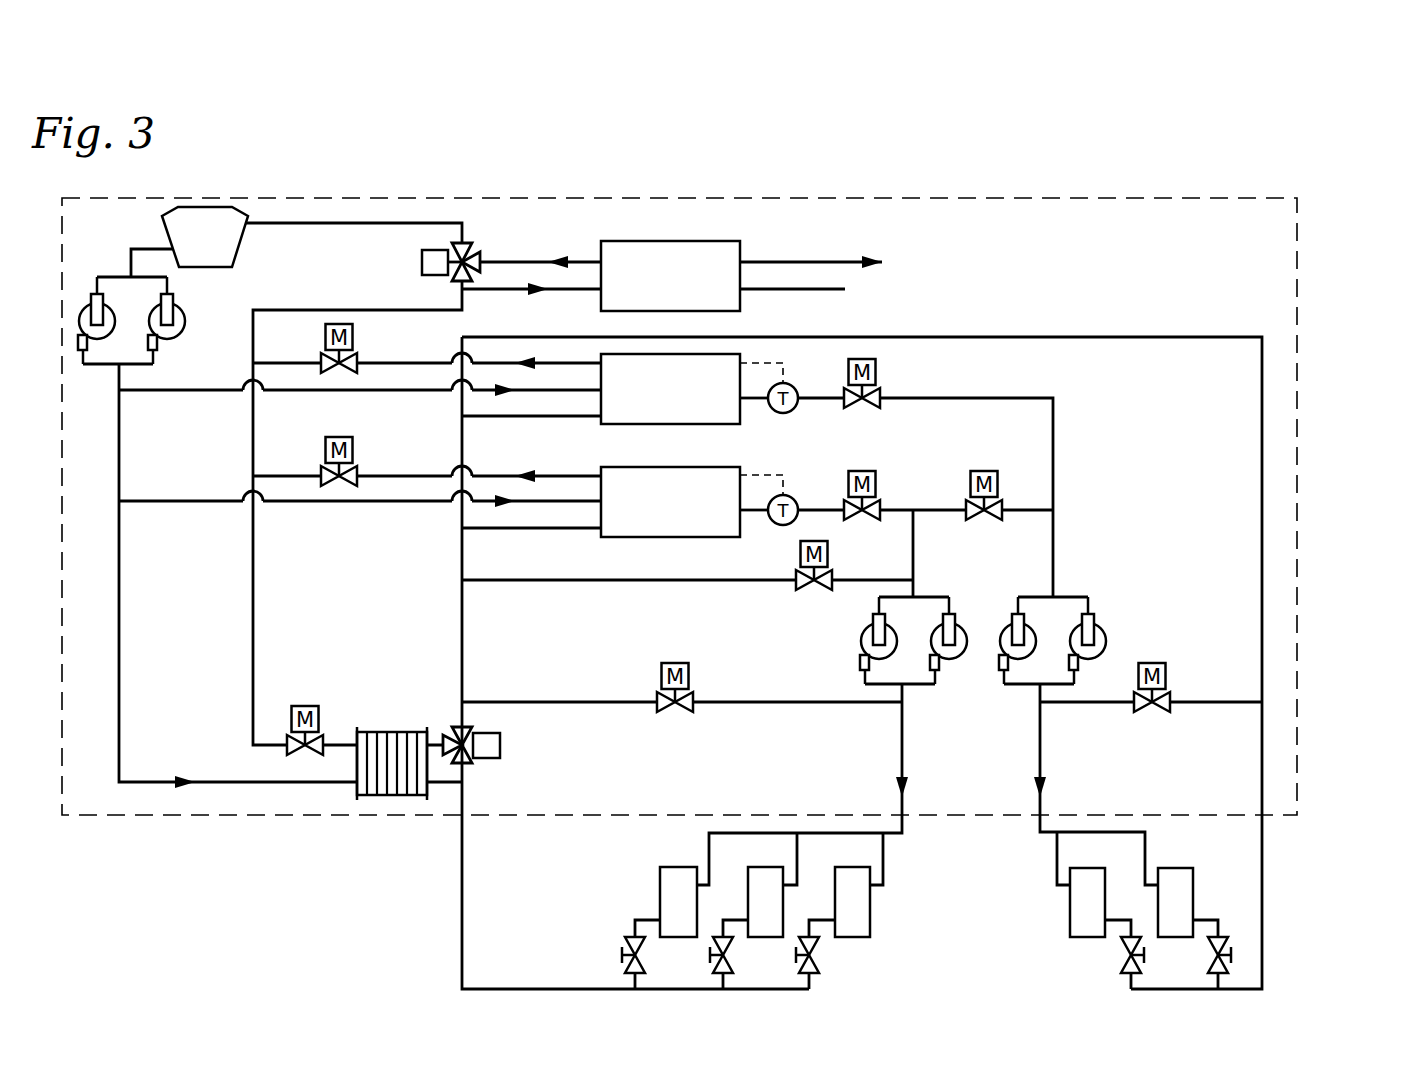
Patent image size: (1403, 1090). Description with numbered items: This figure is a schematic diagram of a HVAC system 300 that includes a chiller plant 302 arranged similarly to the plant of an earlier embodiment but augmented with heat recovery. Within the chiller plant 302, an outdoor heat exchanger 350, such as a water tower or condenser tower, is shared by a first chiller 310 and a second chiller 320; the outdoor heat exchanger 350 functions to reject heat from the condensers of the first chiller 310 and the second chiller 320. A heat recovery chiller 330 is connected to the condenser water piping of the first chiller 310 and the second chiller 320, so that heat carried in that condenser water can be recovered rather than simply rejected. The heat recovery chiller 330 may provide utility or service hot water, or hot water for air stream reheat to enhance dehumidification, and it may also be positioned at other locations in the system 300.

The HVAC system 300 is at (1147, 172).
The chiller plant 302 is at (1297, 262).
The first chiller 310 is at (651, 395).
The second chiller 320 is at (651, 508).
The heat recovery chiller 330 is at (651, 283).
The outdoor heat exchanger 350 is at (186, 246).